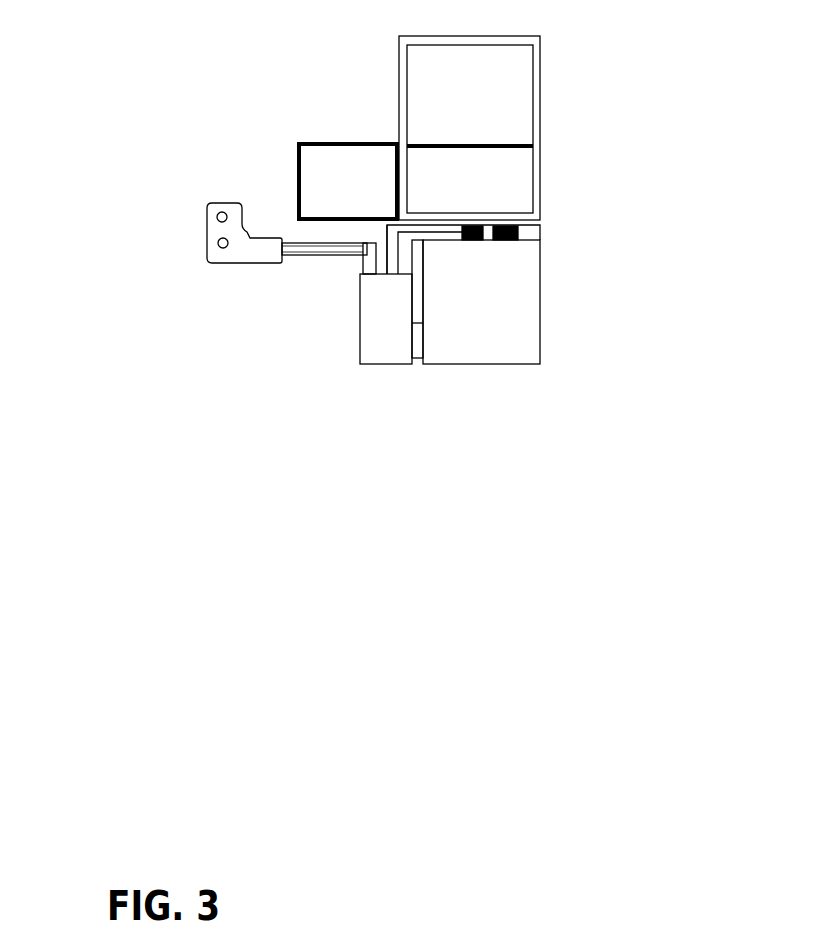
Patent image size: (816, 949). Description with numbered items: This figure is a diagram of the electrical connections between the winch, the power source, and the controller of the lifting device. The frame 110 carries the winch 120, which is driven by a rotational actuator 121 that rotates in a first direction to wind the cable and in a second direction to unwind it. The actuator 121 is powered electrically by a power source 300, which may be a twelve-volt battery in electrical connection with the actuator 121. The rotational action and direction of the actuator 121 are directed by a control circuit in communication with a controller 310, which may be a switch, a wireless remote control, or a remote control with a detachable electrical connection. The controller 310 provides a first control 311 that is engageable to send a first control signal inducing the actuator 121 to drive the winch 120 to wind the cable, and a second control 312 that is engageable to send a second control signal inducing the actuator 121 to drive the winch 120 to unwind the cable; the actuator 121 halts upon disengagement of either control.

The frame 110 is at (395, 102).
The winch 120 is at (498, 126).
The rotational actuator 121 is at (333, 182).
The power source 300 is at (458, 320).
The controller 310 is at (242, 252).
The first control 311 is at (220, 217).
The second control 312 is at (223, 244).